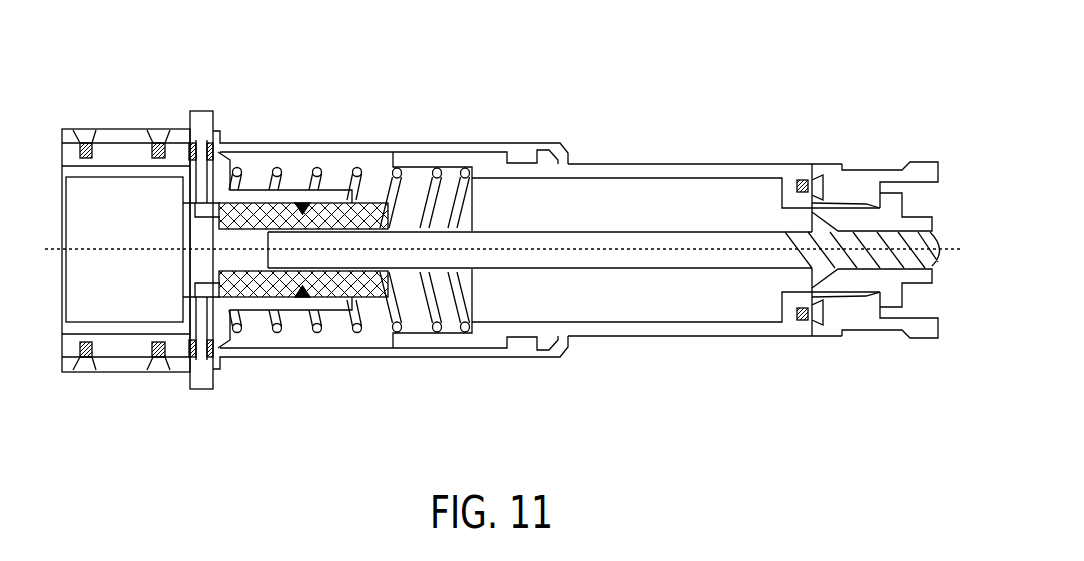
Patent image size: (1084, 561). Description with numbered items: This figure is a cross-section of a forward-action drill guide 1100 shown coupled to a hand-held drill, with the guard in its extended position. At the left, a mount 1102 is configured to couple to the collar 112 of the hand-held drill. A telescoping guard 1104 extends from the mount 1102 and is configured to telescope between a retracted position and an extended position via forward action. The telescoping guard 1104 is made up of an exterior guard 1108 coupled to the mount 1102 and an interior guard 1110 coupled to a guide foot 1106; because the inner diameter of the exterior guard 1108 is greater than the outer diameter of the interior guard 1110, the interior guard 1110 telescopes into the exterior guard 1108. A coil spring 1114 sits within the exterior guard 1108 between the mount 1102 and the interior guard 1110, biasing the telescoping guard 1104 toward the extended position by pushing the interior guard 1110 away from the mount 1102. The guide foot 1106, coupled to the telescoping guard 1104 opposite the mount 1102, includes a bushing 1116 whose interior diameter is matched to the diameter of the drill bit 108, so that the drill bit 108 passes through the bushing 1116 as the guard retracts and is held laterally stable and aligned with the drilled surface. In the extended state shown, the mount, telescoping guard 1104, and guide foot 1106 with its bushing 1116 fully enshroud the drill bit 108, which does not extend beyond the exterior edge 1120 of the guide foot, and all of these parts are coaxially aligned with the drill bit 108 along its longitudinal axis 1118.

The forward-action drill guide 1100 is at (790, 104).
The mount 1102 is at (125, 157).
The collar 112 is at (140, 300).
The telescoping guard 1104 is at (460, 396).
The exterior guard 1108 is at (380, 143).
The coil spring 1114 is at (435, 167).
The interior guard 1110 is at (672, 163).
The drill bit 108 is at (658, 238).
The guide foot 1106 is at (853, 328).
The bushing 1116 is at (893, 300).
The exterior edge 1120 is at (938, 153).
The longitudinal axis 1118 is at (948, 258).